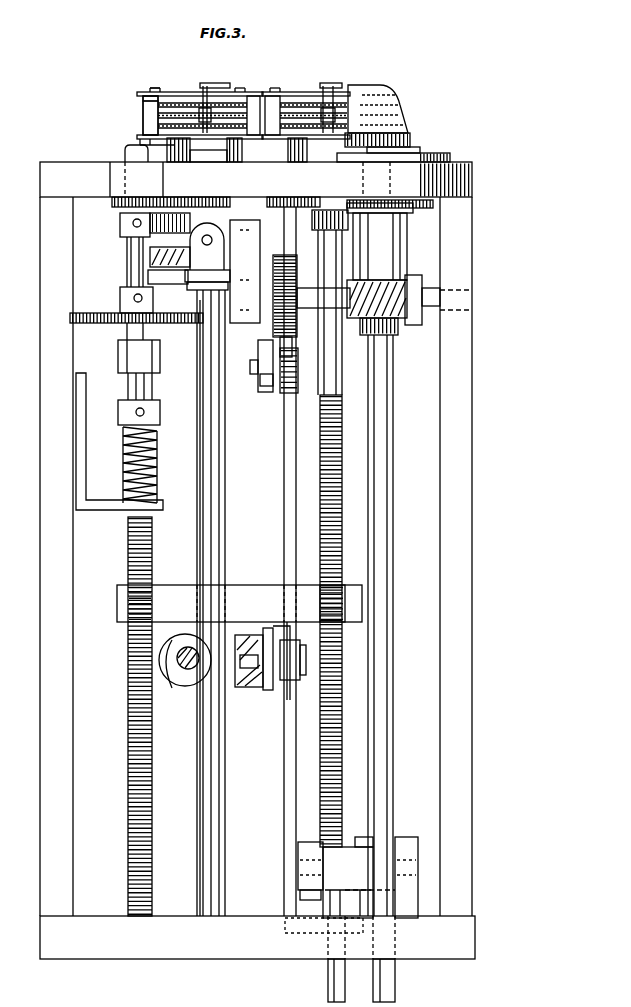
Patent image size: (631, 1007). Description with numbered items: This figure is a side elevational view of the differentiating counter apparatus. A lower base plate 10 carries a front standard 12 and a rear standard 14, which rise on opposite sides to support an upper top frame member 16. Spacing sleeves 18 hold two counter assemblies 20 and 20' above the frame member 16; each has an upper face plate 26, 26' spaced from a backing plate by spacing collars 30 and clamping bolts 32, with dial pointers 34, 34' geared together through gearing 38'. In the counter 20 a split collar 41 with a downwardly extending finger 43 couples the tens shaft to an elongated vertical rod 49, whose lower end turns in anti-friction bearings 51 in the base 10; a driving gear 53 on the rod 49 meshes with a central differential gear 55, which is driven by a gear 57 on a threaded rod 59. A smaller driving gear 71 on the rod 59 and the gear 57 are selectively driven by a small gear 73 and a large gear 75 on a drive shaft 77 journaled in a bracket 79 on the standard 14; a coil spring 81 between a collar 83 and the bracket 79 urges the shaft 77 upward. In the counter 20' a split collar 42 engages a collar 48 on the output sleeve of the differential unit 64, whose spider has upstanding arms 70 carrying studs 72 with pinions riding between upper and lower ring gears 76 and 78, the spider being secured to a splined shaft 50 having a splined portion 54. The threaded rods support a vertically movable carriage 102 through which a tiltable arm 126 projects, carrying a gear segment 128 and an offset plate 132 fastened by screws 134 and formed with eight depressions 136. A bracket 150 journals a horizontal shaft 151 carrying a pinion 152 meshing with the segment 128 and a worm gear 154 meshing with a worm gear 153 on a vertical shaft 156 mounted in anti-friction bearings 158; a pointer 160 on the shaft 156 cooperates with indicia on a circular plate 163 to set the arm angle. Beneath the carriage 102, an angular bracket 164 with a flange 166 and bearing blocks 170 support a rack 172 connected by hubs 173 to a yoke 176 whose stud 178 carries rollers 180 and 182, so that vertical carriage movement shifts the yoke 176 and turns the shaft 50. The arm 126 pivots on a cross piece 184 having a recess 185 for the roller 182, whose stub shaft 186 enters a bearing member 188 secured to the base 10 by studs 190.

The base plate 10 is at (226, 948).
The front standard 12 is at (56, 556).
The rear standard 14 is at (468, 780).
The top frame member 16 is at (256, 179).
The spacing sleeves 18 is at (132, 145).
The counter assembly 20 is at (303, 102).
The counter assembly 20' is at (199, 102).
The upper face plate 26 is at (287, 81).
The upper face plate 26' is at (132, 101).
The spacing collars 30 is at (143, 118).
The clamping bolts 32 is at (145, 91).
The dial pointers 34 is at (339, 99).
The dial pointers 34' is at (217, 96).
The gearing 38' is at (202, 98).
The split collar 41 is at (288, 144).
The split collar 42 is at (235, 160).
The finger 43 is at (193, 160).
The second collar 48 is at (246, 158).
The vertical rod 49 is at (320, 470).
The splined shaft 50 is at (234, 479).
The anti-friction bearings 51 is at (318, 950).
The driving gear 53 is at (308, 210).
The splined portion 54 is at (226, 514).
The central differential gear 55 is at (232, 208).
The gear 57 is at (182, 208).
The threaded rod 59 is at (118, 553).
The differential unit 64 is at (183, 299).
The upstanding arms 70 is at (220, 240).
The second driving gear 71 is at (118, 350).
The stud 72 is at (204, 248).
The small gear 73 is at (114, 210).
The large gear 75 is at (108, 323).
The upper ring gear 76 is at (170, 229).
The drive shaft 77 is at (153, 396).
The lower ring gear 78 is at (170, 266).
The bracket 79 is at (113, 512).
The coil spring 81 is at (156, 448).
The collar 83 is at (160, 412).
The carriage 102 is at (273, 580).
The tiltable arm 126 is at (284, 436).
The gear segment 128 is at (290, 372).
The offset plate 132 is at (252, 387).
The screws 134 is at (258, 376).
The depressions 136 is at (262, 345).
The bracket 150 is at (247, 271).
The horizontal shaft 151 is at (306, 323).
The pinion 152 is at (306, 251).
The worm gear 153 is at (408, 278).
The worm gear 154 is at (392, 332).
The vertical shaft 156 is at (393, 411).
The anti-friction bearings 158 is at (410, 218).
The pointer 160 is at (388, 106).
The circular plate 163 is at (440, 155).
The angular bracket 164 is at (306, 630).
The flange 166 is at (272, 712).
The bearing blocks 170 is at (178, 632).
The rack member 172 is at (186, 672).
The hubs 173 is at (172, 686).
The yoke member 176 is at (238, 635).
The stud 178 is at (306, 641).
The roller 180 is at (268, 690).
The roller 182 is at (298, 682).
The cross piece 184 is at (300, 890).
The recess 185 is at (298, 860).
The stub shaft 186 is at (405, 890).
The bearing member 188 is at (405, 837).
The studs 190 is at (340, 888).